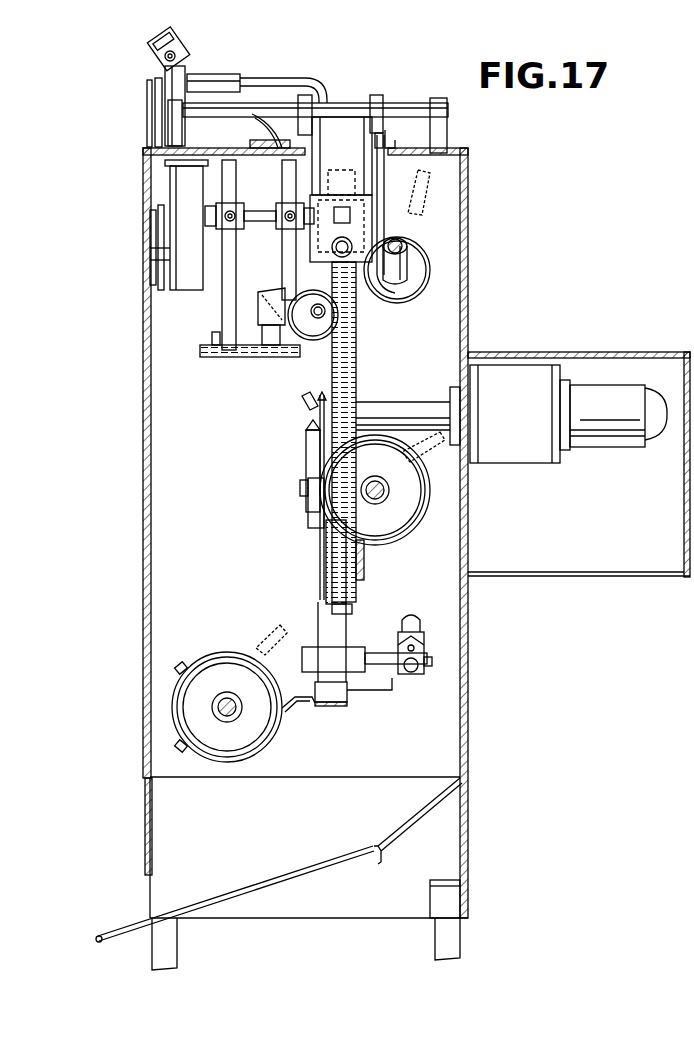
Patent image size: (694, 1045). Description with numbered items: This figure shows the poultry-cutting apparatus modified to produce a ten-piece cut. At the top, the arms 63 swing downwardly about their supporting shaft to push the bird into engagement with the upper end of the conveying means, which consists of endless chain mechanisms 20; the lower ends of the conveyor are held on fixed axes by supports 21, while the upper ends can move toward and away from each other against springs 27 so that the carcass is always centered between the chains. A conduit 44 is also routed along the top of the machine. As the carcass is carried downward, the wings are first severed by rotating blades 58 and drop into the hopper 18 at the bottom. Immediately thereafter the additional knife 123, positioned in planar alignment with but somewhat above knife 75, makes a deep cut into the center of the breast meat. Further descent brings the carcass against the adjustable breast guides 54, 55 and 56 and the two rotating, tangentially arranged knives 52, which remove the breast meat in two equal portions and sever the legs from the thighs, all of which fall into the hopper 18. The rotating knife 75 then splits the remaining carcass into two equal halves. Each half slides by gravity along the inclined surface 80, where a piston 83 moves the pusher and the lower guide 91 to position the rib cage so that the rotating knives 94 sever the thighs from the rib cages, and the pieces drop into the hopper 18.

The hopper 18 is at (330, 849).
The endless chain mechanisms 20 is at (357, 360).
The supports 21 is at (326, 560).
The springs 27 is at (330, 244).
The conduit 44 is at (286, 78).
The rotating knives 52 is at (320, 455).
The adjustable breast guide 54 is at (306, 448).
The adjustable breast guide 55 is at (300, 485).
The adjustable breast guide 56 is at (302, 400).
The rotating blades 58 is at (405, 298).
The arms 63 is at (152, 48).
The rotating knife 75 is at (405, 535).
The inclined surface 80 is at (348, 704).
The piston 83 is at (415, 628).
The lower guide 91 is at (294, 702).
The rotating knives 94 is at (272, 738).
The additional knife 123 is at (305, 360).